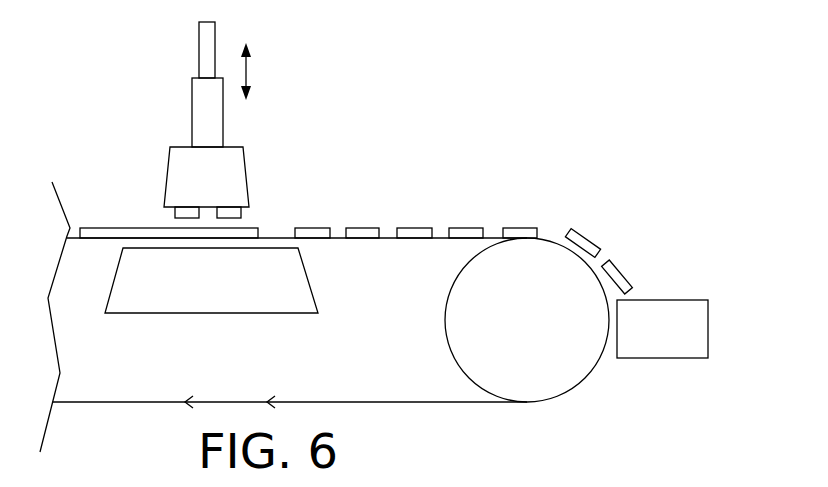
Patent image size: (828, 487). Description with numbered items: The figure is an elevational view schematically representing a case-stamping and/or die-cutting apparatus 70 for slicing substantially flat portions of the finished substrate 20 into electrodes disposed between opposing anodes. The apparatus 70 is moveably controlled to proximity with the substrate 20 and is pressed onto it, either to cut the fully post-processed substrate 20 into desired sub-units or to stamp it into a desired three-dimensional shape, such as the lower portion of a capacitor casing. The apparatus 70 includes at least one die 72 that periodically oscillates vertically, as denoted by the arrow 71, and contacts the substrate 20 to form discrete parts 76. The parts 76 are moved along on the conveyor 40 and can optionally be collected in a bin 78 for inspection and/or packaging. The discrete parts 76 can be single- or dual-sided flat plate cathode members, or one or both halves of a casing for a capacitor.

The substrate 20 is at (105, 224).
The conveyor 40 is at (380, 405).
The case-stamping and/or die-cutting apparatus 70 is at (254, 152).
The arrow 71 is at (247, 74).
The die 72 is at (177, 223).
The discrete parts 76 is at (321, 221).
The bin 78 is at (660, 358).